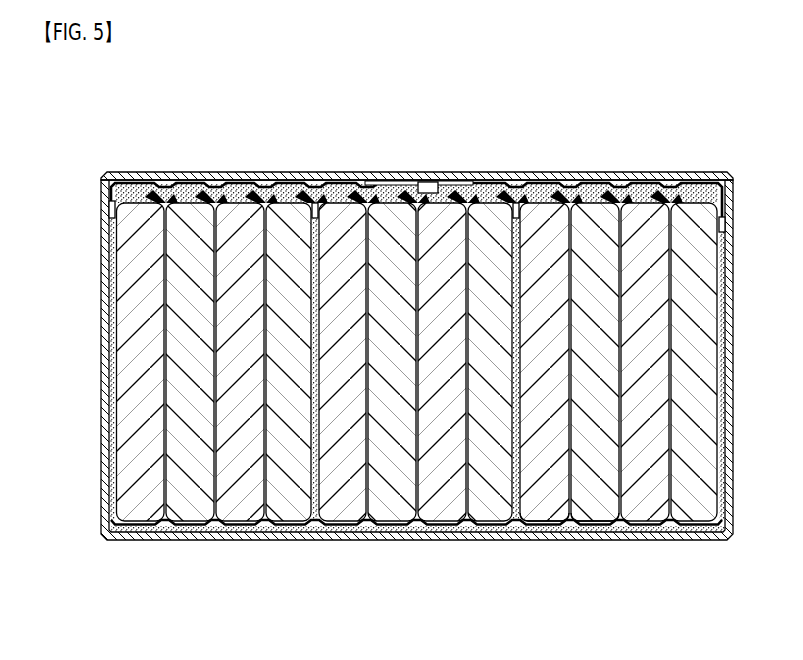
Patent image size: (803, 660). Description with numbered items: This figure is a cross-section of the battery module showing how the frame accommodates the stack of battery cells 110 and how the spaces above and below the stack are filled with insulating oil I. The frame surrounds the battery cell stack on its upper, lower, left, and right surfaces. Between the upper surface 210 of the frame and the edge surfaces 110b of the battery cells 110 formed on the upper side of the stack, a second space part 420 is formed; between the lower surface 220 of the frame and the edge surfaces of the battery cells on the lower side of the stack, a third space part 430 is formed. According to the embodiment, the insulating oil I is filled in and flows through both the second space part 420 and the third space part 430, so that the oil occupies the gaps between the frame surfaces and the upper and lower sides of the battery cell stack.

The battery cell 110 is at (188, 344).
The edge surfaces of the battery cells 110b is at (547, 525).
The upper surface of the frame 210 is at (213, 172).
The lower surface of the frame 220 is at (408, 533).
The second space part 420 is at (366, 189).
The third space part 430 is at (315, 528).
The insulating oil I is at (520, 188).